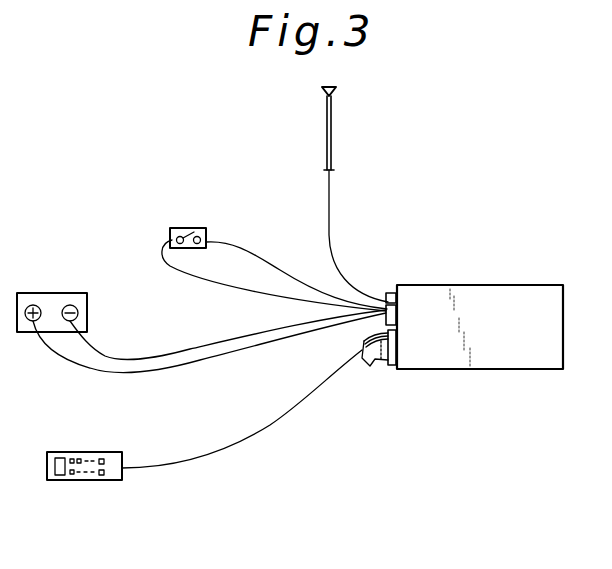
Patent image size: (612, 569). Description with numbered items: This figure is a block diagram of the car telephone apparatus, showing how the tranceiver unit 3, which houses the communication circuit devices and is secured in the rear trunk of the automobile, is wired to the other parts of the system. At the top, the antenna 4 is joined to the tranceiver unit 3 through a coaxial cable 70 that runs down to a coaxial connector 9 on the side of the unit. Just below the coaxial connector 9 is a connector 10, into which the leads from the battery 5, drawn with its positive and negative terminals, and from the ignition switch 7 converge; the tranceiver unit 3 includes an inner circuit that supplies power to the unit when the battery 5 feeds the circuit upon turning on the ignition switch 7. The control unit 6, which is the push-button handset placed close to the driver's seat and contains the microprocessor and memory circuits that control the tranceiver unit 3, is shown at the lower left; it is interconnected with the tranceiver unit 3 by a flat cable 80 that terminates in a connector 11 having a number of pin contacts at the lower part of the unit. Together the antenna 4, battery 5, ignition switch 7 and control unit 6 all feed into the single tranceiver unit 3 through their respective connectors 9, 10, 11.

The tranceiver unit 3 is at (478, 296).
The antenna 4 is at (332, 133).
The battery 5 is at (45, 293).
The control unit 6 is at (69, 452).
The ignition switch 7 is at (185, 228).
The coaxial connector 9 is at (389, 293).
The connector 10 is at (399, 305).
The connector 11 is at (394, 358).
The coaxial cable 70 is at (331, 232).
The flat cable 80 is at (371, 362).